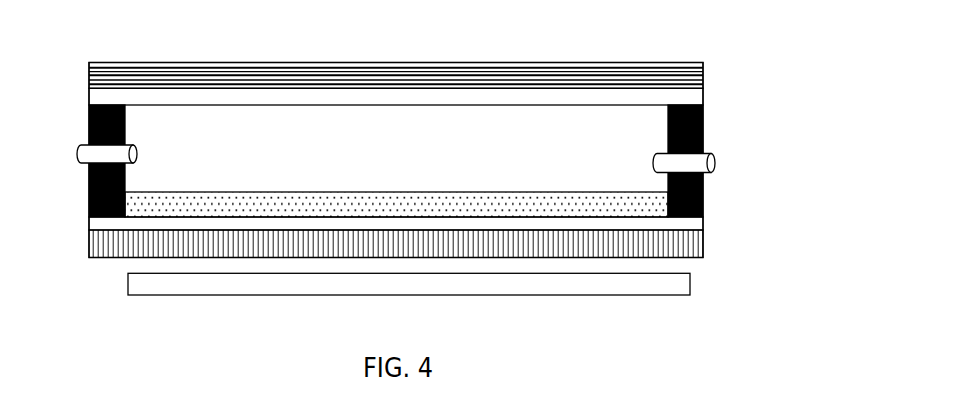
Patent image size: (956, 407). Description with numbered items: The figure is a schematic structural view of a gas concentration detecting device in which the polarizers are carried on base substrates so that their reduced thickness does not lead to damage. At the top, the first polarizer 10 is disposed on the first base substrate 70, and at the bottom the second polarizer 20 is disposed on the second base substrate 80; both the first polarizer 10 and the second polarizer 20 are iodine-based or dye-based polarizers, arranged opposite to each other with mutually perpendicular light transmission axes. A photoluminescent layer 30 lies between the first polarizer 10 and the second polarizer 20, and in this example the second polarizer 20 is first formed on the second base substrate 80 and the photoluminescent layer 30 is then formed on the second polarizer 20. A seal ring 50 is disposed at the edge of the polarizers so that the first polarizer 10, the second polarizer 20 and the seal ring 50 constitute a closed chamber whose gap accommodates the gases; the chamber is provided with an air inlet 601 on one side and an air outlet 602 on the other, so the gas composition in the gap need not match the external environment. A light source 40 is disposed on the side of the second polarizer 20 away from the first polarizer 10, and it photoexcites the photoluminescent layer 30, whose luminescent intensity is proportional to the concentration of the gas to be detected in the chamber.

The first polarizer 10 is at (652, 82).
The first base substrate 70 is at (687, 97).
The seal ring 50 is at (703, 122).
The air inlet 601 is at (697, 163).
The air outlet 602 is at (100, 153).
The photoluminescent layer 30 is at (703, 201).
The second base substrate 80 is at (680, 223).
The second polarizer 20 is at (658, 246).
The light source 40 is at (658, 286).